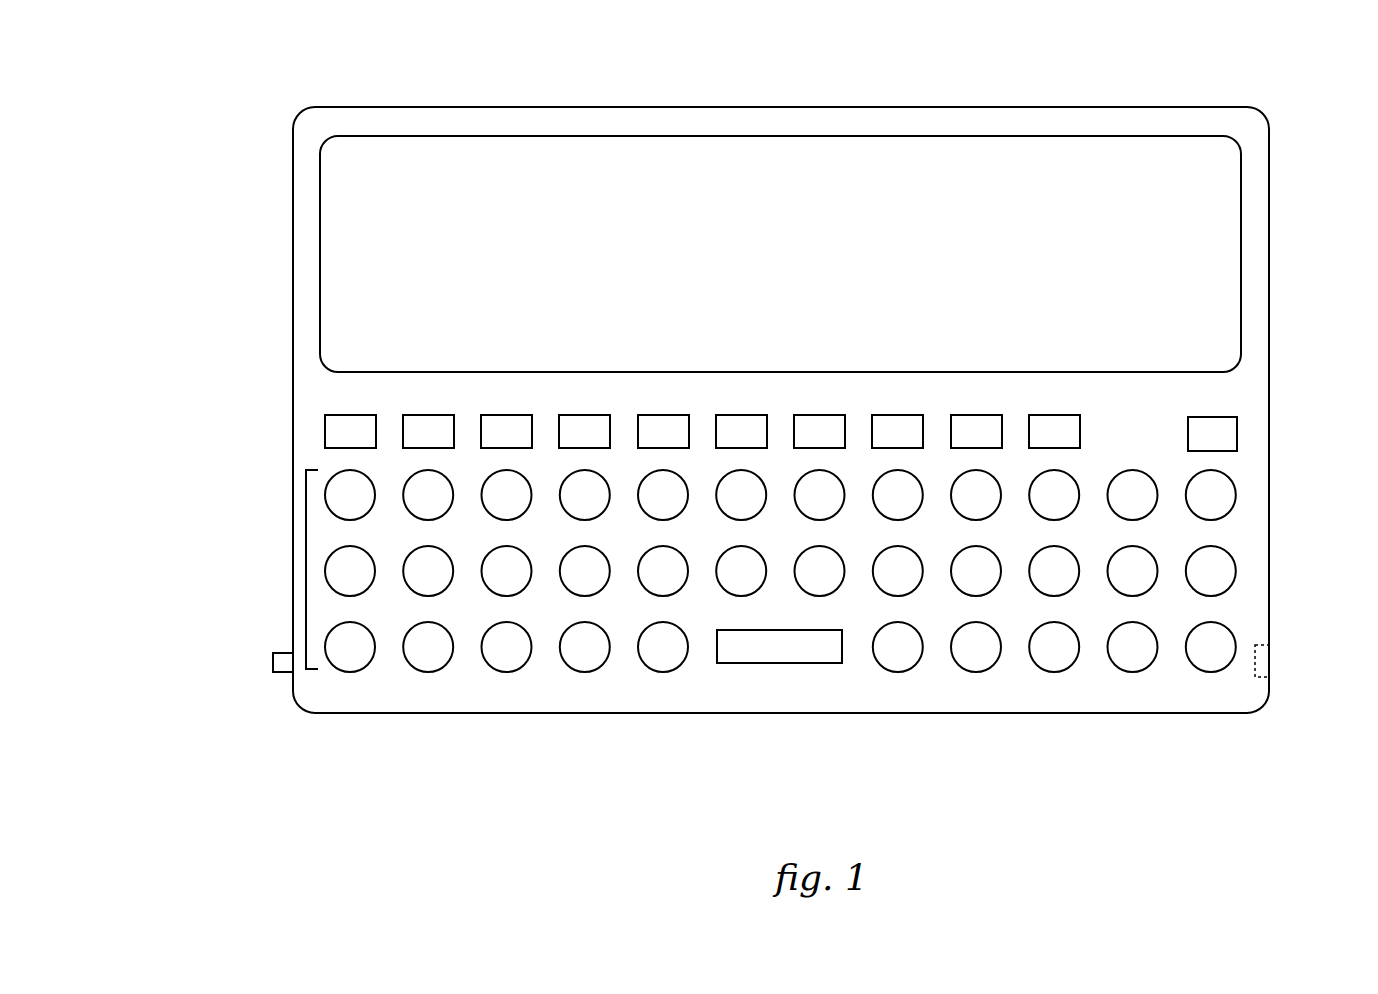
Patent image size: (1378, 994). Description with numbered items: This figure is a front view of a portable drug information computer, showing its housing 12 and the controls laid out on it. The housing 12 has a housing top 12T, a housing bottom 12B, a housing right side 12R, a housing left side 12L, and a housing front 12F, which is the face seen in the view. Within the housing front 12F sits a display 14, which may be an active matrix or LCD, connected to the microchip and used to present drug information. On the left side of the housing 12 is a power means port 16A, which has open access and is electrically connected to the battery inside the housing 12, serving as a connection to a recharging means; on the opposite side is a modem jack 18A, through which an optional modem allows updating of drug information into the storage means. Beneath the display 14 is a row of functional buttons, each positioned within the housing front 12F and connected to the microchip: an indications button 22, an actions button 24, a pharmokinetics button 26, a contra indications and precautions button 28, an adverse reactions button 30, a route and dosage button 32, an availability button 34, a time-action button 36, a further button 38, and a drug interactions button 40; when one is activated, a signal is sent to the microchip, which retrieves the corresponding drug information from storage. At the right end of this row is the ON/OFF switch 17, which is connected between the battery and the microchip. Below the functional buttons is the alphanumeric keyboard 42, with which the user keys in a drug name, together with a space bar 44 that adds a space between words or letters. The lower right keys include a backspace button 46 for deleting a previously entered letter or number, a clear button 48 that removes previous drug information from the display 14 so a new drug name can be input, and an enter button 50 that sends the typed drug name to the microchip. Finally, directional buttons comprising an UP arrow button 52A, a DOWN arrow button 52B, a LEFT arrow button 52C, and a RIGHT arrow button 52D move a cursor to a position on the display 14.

The housing 12 is at (1140, 107).
The housing top 12T is at (830, 107).
The housing left side 12L is at (293, 203).
The housing right side 12R is at (1269, 209).
The housing bottom 12B is at (669, 713).
The housing front 12F is at (1252, 170).
The display 14 is at (1206, 247).
The power means port 16A is at (273, 661).
The ON/OFF switch 17 is at (1213, 430).
The modem jack 18A is at (1263, 662).
The indications button 22 is at (350, 430).
The actions button 24 is at (428, 430).
The pharmokinetics button 26 is at (506, 430).
The contra indications & precautions button 28 is at (585, 430).
The adverse reactions button 30 is at (663, 430).
The route & dosage button 32 is at (741, 430).
The availability button 34 is at (819, 430).
The time-action button 36 is at (898, 430).
The function key 38 is at (976, 430).
The drug interactions button 40 is at (1054, 430).
The alphanumeric keyboard 42 is at (306, 569).
The space bar 44 is at (782, 648).
The backspace button 46 is at (1055, 650).
The clear button 48 is at (1133, 650).
The enter button 50 is at (1212, 650).
The UP arrow button 52A is at (1235, 469).
The DOWN arrow button 52B is at (1230, 492).
The LEFT arrow button 52C is at (1235, 563).
The RIGHT arrow button 52D is at (1227, 583).